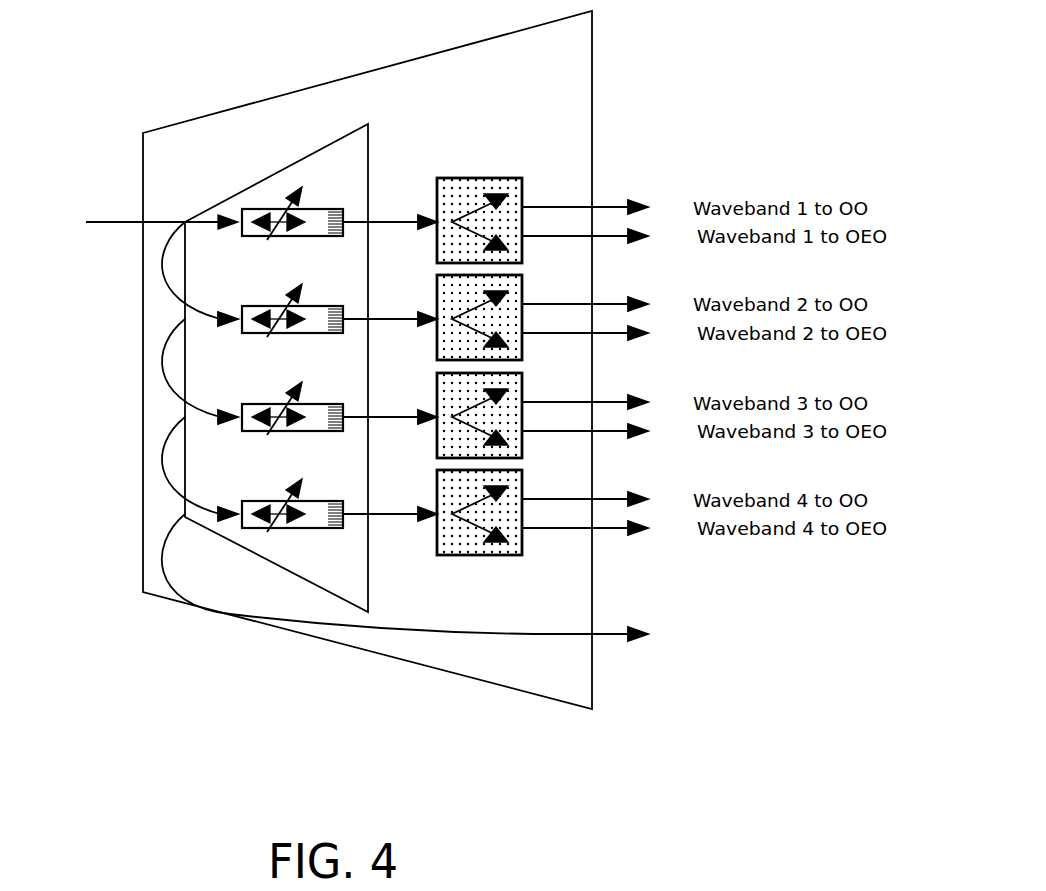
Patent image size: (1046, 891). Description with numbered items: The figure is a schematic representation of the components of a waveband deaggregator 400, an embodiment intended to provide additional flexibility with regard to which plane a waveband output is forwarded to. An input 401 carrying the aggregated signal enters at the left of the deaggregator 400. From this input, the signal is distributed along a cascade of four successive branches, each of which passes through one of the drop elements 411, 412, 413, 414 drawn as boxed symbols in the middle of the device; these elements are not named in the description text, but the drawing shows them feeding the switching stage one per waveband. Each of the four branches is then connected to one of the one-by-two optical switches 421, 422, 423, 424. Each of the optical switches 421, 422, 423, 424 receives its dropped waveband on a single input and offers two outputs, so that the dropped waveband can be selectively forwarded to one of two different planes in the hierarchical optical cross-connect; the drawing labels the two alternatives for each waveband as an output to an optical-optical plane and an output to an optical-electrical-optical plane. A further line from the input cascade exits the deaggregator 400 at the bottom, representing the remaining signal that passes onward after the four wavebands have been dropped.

The waveband switching node 400 is at (327, 682).
The input port 401 is at (130, 202).
The tunable waveband filter 411 is at (297, 210).
The tunable waveband filter 412 is at (297, 303).
The tunable waveband filter 413 is at (297, 404).
The tunable waveband filter 414 is at (297, 501).
The 1×2 optical switch 421 is at (479, 203).
The 1×2 optical switch 422 is at (479, 317).
The 1×2 optical switch 423 is at (479, 415).
The 1×2 optical switch 424 is at (479, 533).